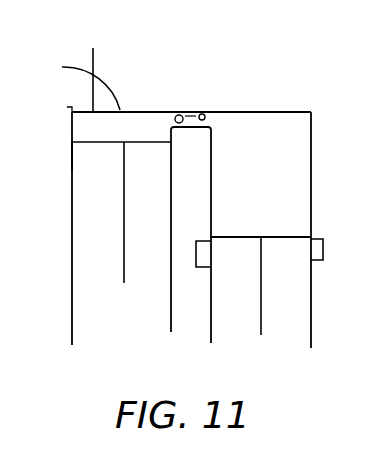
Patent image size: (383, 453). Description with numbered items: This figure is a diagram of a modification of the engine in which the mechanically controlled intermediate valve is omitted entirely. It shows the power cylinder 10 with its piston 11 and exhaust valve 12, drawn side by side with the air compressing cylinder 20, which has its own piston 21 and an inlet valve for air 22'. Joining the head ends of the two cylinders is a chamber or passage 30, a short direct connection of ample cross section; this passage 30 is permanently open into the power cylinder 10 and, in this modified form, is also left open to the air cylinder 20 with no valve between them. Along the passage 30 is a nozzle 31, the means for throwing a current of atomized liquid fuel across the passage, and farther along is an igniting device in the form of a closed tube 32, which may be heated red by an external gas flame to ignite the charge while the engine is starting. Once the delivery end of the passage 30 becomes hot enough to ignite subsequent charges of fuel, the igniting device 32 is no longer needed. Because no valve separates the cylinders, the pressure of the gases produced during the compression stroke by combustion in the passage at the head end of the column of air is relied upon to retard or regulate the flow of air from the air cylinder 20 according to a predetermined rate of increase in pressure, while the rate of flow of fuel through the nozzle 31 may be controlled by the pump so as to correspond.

The power cylinder 10 is at (189, 226).
The piston 11 is at (80, 145).
The exhaust valve 12 is at (102, 112).
The air compressing cylinder 20 is at (241, 230).
The piston 21 is at (241, 237).
The inlet valve for air 22' is at (333, 237).
The chamber or passage 30 is at (192, 115).
The nozzle 31 is at (205, 114).
The closed tube 32 is at (181, 115).